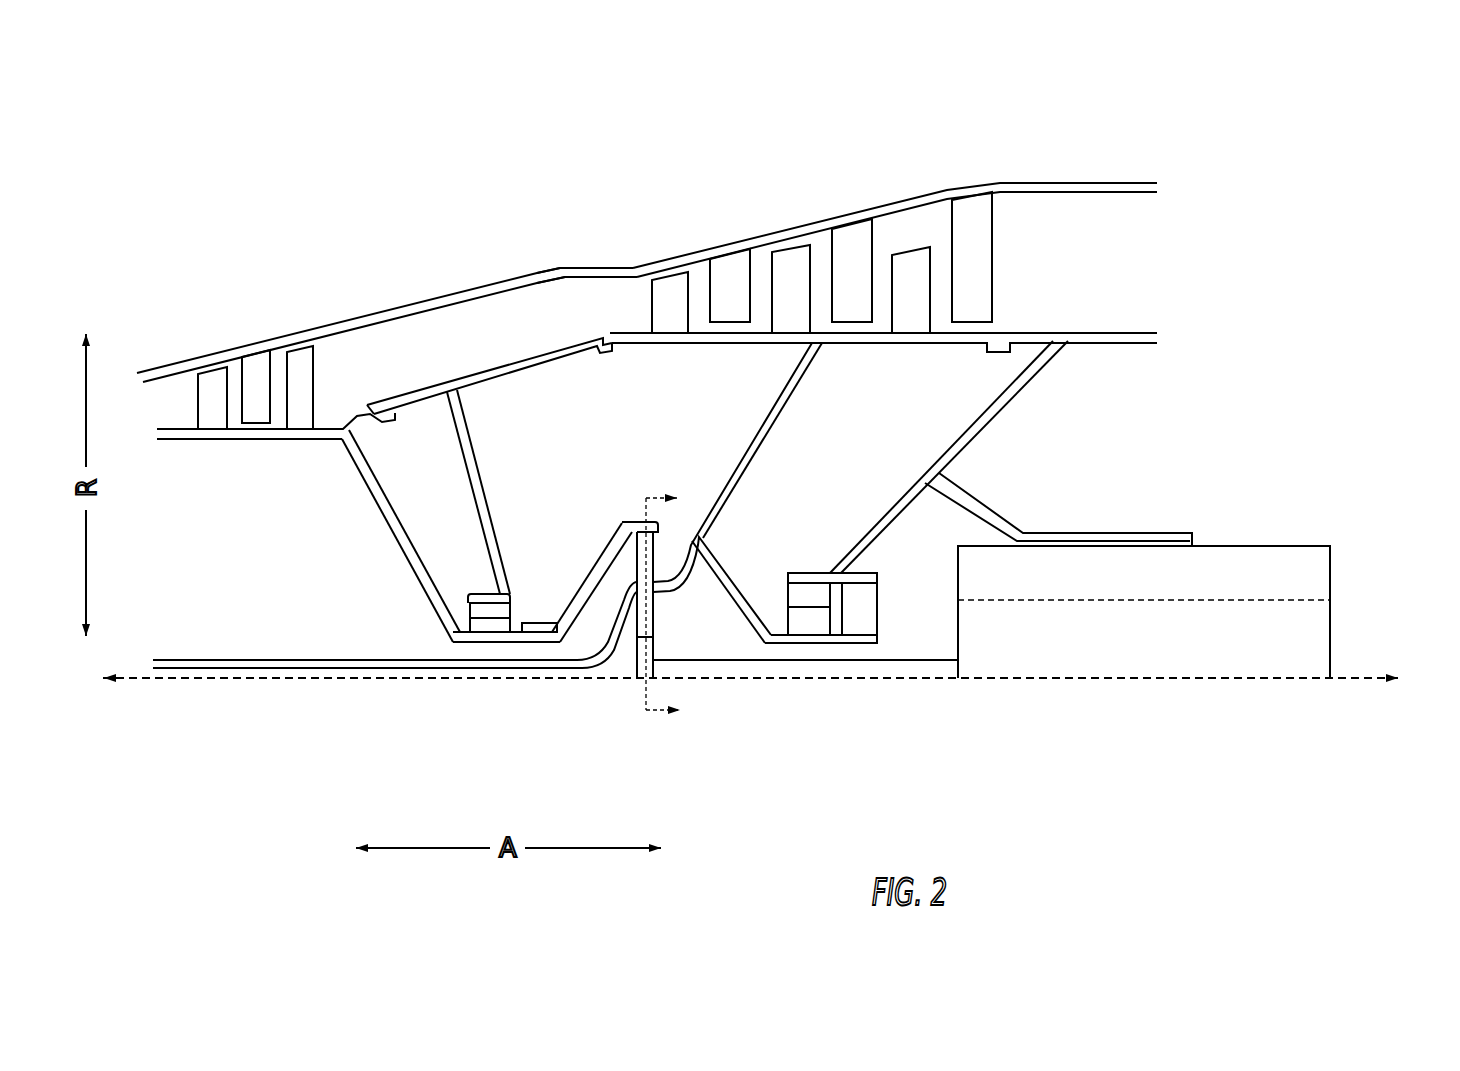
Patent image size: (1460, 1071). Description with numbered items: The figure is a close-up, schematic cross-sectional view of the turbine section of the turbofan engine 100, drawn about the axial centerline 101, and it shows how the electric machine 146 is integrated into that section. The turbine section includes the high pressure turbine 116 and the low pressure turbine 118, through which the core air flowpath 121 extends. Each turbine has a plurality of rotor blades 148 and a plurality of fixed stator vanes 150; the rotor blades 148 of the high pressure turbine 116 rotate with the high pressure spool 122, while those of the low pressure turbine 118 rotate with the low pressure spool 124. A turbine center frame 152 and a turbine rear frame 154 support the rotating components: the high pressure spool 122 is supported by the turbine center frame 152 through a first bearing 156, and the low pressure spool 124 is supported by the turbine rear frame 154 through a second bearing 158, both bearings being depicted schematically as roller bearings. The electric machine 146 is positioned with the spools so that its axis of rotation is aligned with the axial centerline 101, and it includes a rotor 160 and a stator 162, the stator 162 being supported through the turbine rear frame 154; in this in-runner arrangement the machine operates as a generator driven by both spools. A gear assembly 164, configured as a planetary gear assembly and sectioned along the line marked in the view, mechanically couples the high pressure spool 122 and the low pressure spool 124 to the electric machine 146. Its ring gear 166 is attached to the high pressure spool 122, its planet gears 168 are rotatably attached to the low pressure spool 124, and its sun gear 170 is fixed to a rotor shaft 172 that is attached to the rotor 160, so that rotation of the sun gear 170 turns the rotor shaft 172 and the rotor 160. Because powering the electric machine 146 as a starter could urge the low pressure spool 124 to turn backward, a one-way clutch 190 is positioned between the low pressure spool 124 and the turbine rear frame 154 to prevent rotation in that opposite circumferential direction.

The turbofan engine 100 is at (1150, 102).
The axial centerline 101 is at (1372, 678).
The high pressure turbine 116 is at (281, 277).
The low pressure turbine 118 is at (931, 170).
The core air flowpath 121 is at (540, 340).
The high pressure spool 122 is at (367, 483).
The low pressure spool 124 is at (353, 668).
The electric machine 146 is at (1264, 545).
The rotor blades 148 is at (301, 391).
The stator vanes 150 is at (247, 380).
The turbine center frame 152 is at (574, 326).
The turbine rear frame 154 is at (1102, 398).
The first bearing 156 is at (513, 609).
The second bearing 158 is at (817, 596).
The rotor 160 is at (1310, 643).
The stator 162 is at (1317, 572).
The gear assembly 164 is at (623, 512).
The ring gear 166 is at (651, 517).
The planet gears 168 is at (655, 612).
The sun gear 170 is at (640, 653).
The rotor shaft 172 is at (797, 662).
The one-way clutch 190 is at (864, 607).